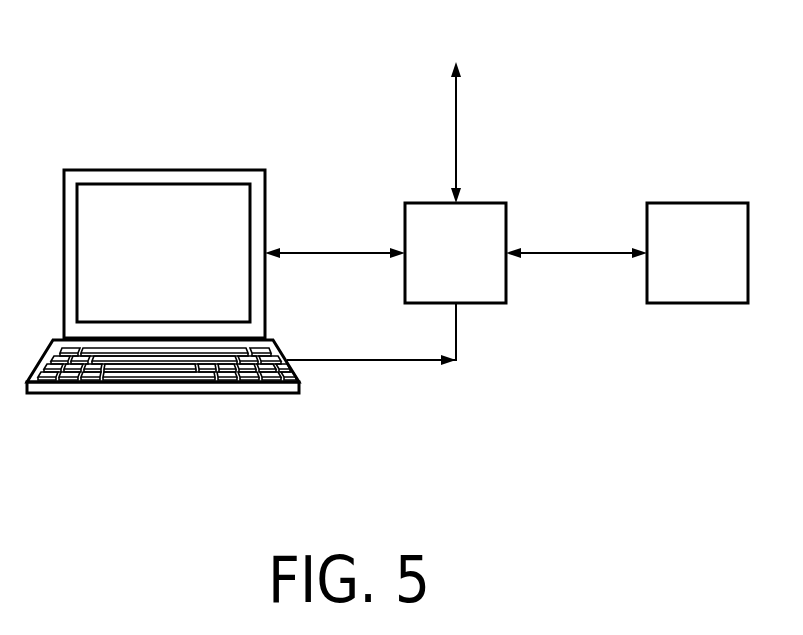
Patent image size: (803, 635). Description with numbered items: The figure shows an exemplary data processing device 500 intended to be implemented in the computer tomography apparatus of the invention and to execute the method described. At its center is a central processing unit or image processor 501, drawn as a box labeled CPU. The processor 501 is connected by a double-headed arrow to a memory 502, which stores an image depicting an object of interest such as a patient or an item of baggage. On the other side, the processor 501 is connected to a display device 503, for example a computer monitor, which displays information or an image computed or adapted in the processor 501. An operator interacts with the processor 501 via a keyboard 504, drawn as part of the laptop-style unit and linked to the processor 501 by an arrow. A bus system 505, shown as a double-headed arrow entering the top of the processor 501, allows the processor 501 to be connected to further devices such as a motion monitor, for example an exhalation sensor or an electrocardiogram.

The data processing device 500 is at (547, 87).
The central processing unit 501 is at (495, 203).
The memory 502 is at (696, 203).
The display device 503 is at (163, 170).
The keyboard 504 is at (163, 393).
The bus system 505 is at (456, 133).